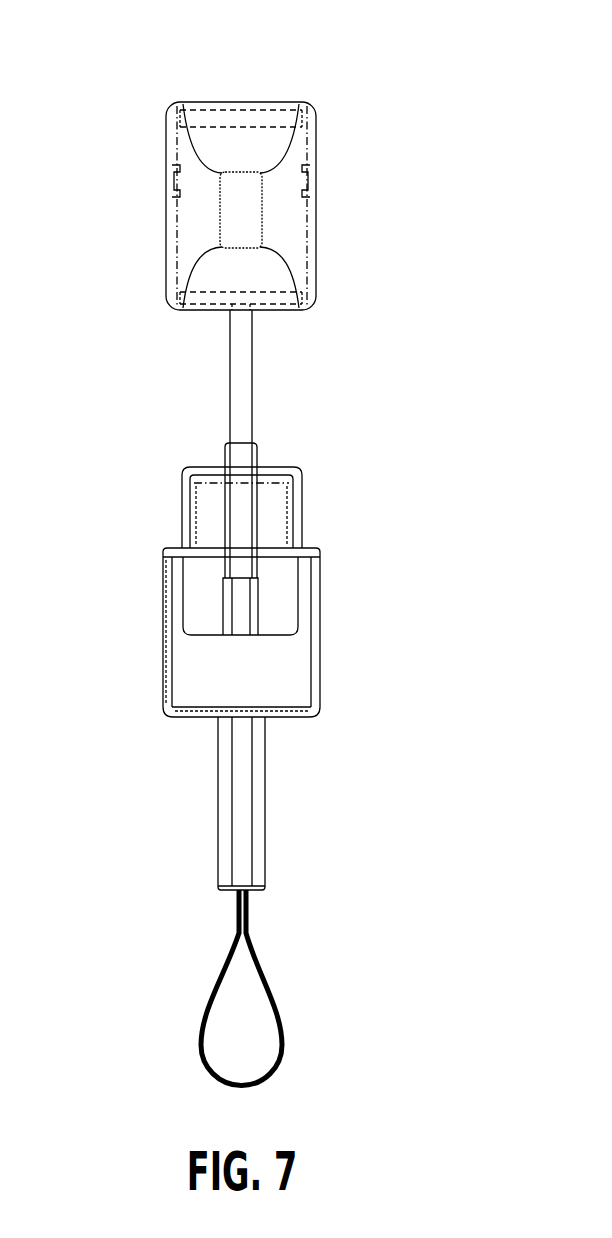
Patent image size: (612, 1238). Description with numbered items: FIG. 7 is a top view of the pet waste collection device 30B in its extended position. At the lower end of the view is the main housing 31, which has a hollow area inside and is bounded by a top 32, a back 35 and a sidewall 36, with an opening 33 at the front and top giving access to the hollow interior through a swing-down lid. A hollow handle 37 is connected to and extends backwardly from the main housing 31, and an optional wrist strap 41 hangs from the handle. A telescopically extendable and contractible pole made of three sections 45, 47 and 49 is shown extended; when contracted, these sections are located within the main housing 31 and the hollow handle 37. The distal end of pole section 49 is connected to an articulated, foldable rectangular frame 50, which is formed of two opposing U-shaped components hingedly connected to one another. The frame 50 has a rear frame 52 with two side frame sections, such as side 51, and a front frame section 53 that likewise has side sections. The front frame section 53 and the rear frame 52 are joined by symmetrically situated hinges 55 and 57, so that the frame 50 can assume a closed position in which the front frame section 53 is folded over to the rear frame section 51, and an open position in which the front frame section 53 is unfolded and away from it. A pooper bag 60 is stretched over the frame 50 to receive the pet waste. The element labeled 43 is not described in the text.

The pet waste collection device 30B is at (326, 460).
The main housing 31 is at (292, 682).
The top 32 is at (272, 652).
The opening 33 is at (165, 548).
The back 35 is at (286, 718).
The sidewall 36 is at (163, 668).
The hollow handle 37 is at (265, 812).
The wrist strap 41 is at (280, 1028).
The cap 43 is at (275, 503).
The pole section 45 is at (238, 602).
The pole section 47 is at (242, 510).
The pole section 49 is at (242, 372).
The frame 50 is at (158, 253).
The side frame section 51 is at (313, 212).
The rear frame 52 is at (275, 308).
The front frame section 53 is at (237, 120).
The hinge 55 is at (165, 172).
The hinge 57 is at (313, 178).
The pooper bag 60 is at (316, 108).